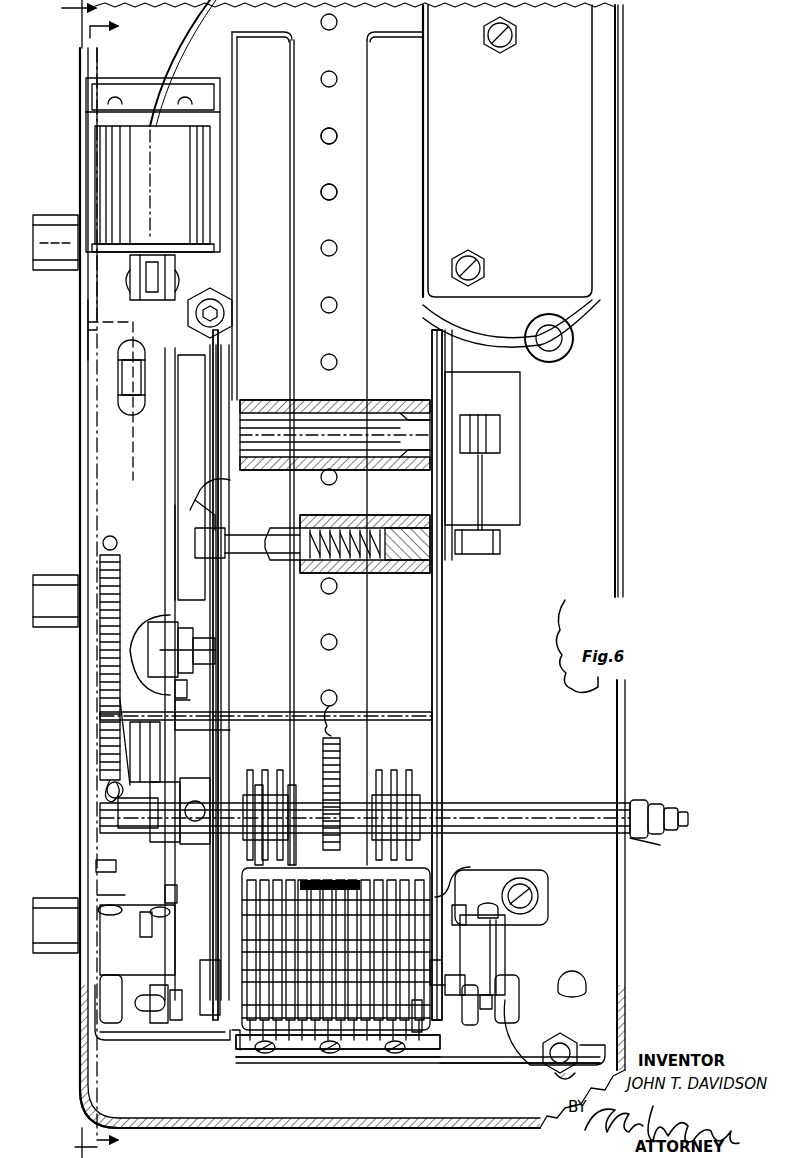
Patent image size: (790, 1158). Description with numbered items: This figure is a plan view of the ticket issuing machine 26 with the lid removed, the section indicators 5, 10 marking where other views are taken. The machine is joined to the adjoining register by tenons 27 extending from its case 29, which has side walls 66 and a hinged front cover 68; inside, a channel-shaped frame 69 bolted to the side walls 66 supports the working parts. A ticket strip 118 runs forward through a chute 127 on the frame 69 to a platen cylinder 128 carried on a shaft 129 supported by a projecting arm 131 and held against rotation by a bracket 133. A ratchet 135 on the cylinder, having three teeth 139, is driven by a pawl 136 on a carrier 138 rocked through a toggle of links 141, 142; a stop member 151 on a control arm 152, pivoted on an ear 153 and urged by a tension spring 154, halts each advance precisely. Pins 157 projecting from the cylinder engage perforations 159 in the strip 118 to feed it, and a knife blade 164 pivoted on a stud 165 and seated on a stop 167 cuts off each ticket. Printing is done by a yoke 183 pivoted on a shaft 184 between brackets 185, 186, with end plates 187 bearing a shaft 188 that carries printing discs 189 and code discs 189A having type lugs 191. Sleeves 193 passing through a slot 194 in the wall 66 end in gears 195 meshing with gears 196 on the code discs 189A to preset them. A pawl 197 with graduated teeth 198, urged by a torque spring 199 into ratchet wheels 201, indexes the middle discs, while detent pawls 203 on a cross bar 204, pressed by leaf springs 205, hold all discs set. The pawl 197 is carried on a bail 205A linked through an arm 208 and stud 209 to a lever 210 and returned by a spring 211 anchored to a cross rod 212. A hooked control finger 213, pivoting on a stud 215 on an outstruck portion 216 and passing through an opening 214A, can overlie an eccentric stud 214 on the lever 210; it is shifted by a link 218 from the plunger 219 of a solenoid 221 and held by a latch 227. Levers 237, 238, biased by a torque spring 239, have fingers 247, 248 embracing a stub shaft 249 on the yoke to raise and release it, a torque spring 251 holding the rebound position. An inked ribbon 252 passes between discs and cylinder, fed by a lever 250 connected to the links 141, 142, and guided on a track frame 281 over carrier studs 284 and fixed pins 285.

The section line 5 is at (72, 580).
The section line 10 is at (113, 578).
The ticket issuing machine 26 is at (686, 102).
The tenons 27 is at (40, 244).
The case 29 is at (82, 304).
The side walls 66 is at (620, 152).
The front cover 68 is at (95, 1112).
The frame 69 is at (97, 350).
The strip 118 is at (358, 141).
The chute 127 is at (405, 105).
The platen cylinder 128 is at (445, 882).
The shaft 129 is at (130, 916).
The projecting arm 131 is at (118, 892).
The bracket 133 is at (511, 872).
The ratchet 135 is at (172, 930).
The pawl 136 is at (175, 1020).
The carrier 138 is at (150, 928).
The teeth 139 is at (200, 890).
The link 141 is at (110, 896).
The link 142 is at (122, 590).
The stop member 151 is at (193, 778).
The control arm 152 is at (160, 782).
The upstanding ear 153 is at (125, 845).
The tension spring 154 is at (108, 755).
The pins 157 is at (330, 980).
The perforations 159 is at (334, 142).
The knife blade 164 is at (470, 1063).
The stud 165 is at (570, 985).
The stop 167 is at (526, 1066).
The yoke 183 is at (226, 372).
The shaft 184 is at (310, 428).
The upstanding bracket 185 is at (170, 350).
The upstanding bracket 186 is at (450, 374).
The plates 187 is at (440, 744).
The shaft 188 is at (460, 907).
The printing discs 189 is at (294, 830).
The code printing discs 189A is at (264, 830).
The type lugs 191 is at (264, 888).
The sleeves 193 is at (640, 800).
The slot 194 is at (612, 813).
The gears 195 is at (262, 770).
The gears 196 is at (336, 948).
The pawl 197 is at (368, 895).
The teeth 198 is at (294, 888).
The torque spring 199 is at (357, 943).
The ratchet wheels 201 is at (344, 925).
The detent pawls 203 is at (266, 1056).
The cross bar 204 is at (235, 1050).
The leaf springs 205 is at (348, 1055).
The bail 205A is at (436, 958).
The arm 208 is at (215, 1018).
The stud 209 is at (160, 988).
The lever 210 is at (170, 614).
The spring 211 is at (336, 755).
The cross rod 212 is at (278, 712).
The hooked control finger 213 is at (160, 603).
The eccentric stud 214 is at (183, 629).
The opening 214A is at (182, 689).
The stud 215 is at (200, 651).
The outstruck portion 216 is at (193, 700).
The link 218 is at (168, 505).
The plunger 219 is at (145, 263).
The electromagnetic solenoid 221 is at (135, 166).
The latch 227 is at (130, 373).
The lever 237 is at (190, 390).
The lever 238 is at (214, 364).
The torque spring 239 is at (197, 478).
The projecting finger 247 is at (212, 516).
The projecting finger 248 is at (224, 575).
The stub shaft 249 is at (200, 540).
The lever 250 is at (130, 736).
The torque spring 251 is at (482, 511).
The inked ribbon 252 is at (502, 941).
The track frame 281 is at (122, 1040).
The carrier studs 284 is at (98, 864).
The fixed pin 285 is at (160, 1024).